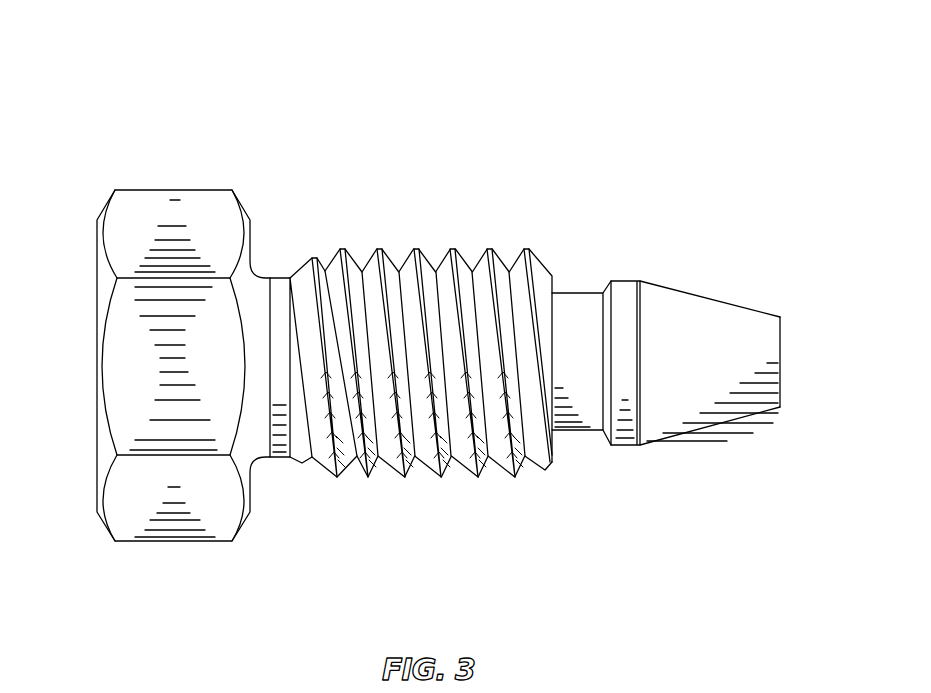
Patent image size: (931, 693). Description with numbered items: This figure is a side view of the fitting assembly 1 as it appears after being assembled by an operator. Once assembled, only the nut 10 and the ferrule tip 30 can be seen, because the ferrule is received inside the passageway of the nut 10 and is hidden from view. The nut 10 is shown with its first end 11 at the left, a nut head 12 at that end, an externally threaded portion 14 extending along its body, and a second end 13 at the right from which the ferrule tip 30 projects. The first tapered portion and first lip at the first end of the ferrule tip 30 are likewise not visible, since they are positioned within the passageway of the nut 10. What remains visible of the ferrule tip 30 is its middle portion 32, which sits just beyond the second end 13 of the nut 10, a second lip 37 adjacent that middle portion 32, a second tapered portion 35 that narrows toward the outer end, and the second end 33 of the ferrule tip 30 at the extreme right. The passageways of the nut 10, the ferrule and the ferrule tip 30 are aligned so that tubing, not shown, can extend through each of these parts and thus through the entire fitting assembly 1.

The fitting assembly 1 is at (151, 59).
The nut 10 is at (311, 151).
The first end 11 is at (98, 250).
The nut head 12 is at (118, 372).
The second end 13 is at (534, 256).
The externally threaded portion 14 is at (368, 480).
The ferrule tip 30 is at (737, 208).
The middle portion 32 is at (576, 294).
The second end 33 is at (781, 314).
The second tapered portion 35 is at (712, 299).
The second lip 37 is at (608, 440).